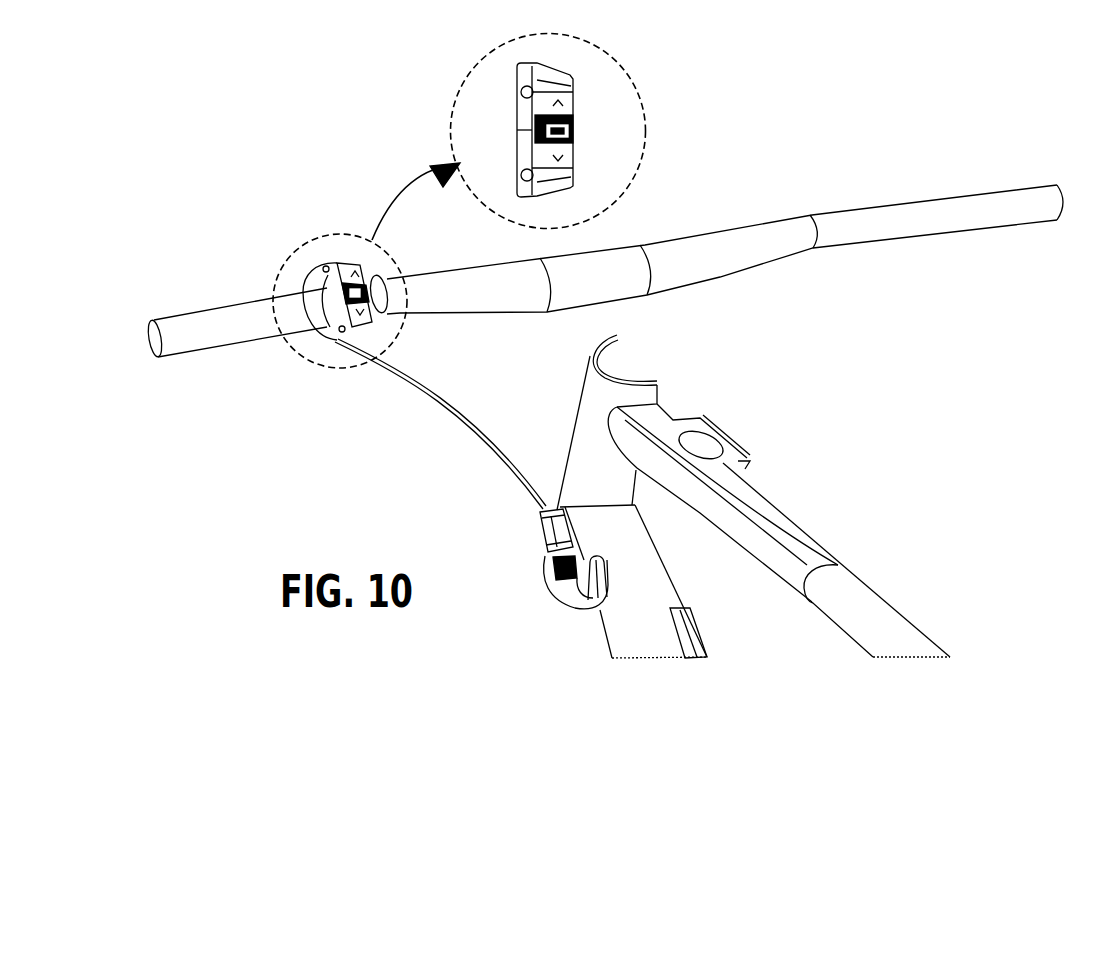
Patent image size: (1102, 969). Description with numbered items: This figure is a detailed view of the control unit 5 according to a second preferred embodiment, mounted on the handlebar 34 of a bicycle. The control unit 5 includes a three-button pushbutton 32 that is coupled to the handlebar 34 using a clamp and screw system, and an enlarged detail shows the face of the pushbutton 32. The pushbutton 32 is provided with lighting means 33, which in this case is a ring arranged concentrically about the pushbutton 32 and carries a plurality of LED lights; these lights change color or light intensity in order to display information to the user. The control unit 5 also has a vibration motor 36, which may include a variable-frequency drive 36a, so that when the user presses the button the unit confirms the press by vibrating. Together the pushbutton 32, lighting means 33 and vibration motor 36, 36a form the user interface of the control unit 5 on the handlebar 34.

The control unit 5 is at (263, 256).
The pushbutton 32 is at (563, 103).
The lighting means 33 is at (537, 174).
The handlebar 34 is at (904, 210).
The vibration motor 36 is at (263, 283).
The variable-frequency drive 36a is at (328, 282).